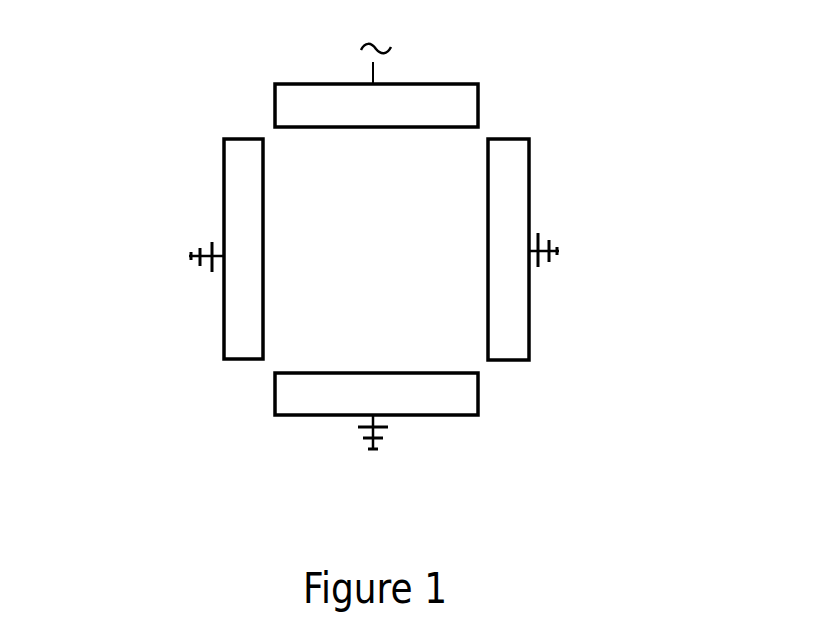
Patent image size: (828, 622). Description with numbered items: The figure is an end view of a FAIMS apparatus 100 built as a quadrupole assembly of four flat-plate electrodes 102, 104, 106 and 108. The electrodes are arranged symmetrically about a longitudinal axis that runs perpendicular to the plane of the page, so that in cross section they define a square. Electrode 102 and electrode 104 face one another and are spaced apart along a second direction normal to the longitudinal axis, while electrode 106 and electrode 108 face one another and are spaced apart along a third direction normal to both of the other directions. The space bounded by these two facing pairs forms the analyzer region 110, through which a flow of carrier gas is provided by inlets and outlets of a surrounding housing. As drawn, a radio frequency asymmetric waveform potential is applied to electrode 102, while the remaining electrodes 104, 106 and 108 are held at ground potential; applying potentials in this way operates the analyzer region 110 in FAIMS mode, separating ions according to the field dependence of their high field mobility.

The FAIMS apparatus 100 is at (128, 105).
The flat-plate electrode 102 is at (437, 100).
The flat-plate electrode 104 is at (438, 393).
The flat-plate electrode 106 is at (513, 325).
The flat-plate electrode 108 is at (242, 318).
The analyzer region 110 is at (314, 308).